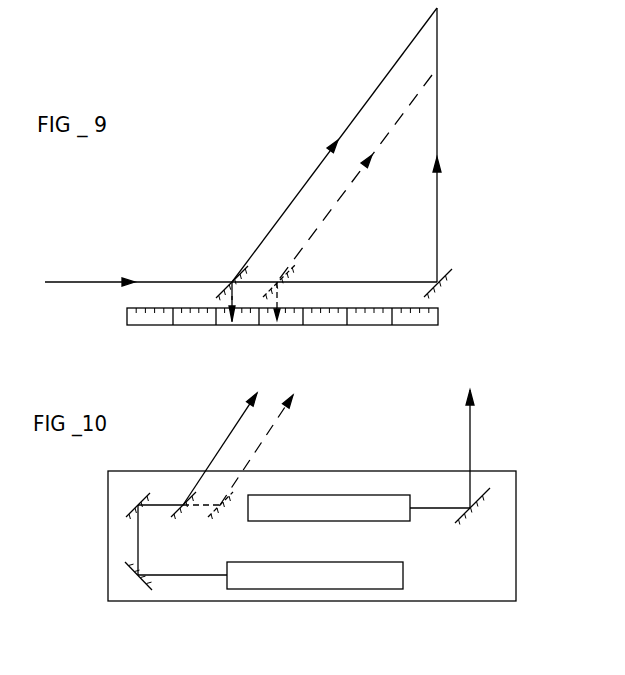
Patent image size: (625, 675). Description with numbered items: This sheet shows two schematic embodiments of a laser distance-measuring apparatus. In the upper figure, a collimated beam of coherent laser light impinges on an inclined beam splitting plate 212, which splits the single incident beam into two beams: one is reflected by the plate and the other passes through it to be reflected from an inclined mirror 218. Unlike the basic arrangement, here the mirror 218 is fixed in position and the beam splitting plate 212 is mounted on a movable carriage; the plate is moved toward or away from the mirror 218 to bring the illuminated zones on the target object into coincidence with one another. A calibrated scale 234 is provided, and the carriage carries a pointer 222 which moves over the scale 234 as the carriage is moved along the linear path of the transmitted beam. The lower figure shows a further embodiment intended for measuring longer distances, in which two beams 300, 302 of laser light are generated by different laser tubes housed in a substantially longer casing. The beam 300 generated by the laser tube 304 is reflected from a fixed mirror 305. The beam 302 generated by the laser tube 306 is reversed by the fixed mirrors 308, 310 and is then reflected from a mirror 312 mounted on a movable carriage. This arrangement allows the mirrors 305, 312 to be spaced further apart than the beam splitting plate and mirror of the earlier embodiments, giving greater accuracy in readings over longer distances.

In FIG. 9, the beam splitting plate 212 is at (219, 287).
In FIG. 9, the mirror 218 is at (448, 282).
In FIG. 9, the pointer 222 is at (232, 298).
In FIG. 9, the calibrated scale 234 is at (430, 326).
In FIG. 10, the beam 300 is at (472, 445).
In FIG. 10, the beam 302 is at (222, 445).
In FIG. 10, the laser tube 304 is at (391, 500).
In FIG. 10, the fixed mirror 305 is at (474, 512).
In FIG. 10, the laser tube 306 is at (323, 589).
In FIG. 10, the fixed mirror 308 is at (125, 576).
In FIG. 10, the fixed mirror 310 is at (133, 499).
In FIG. 10, the mirror 312 is at (183, 516).